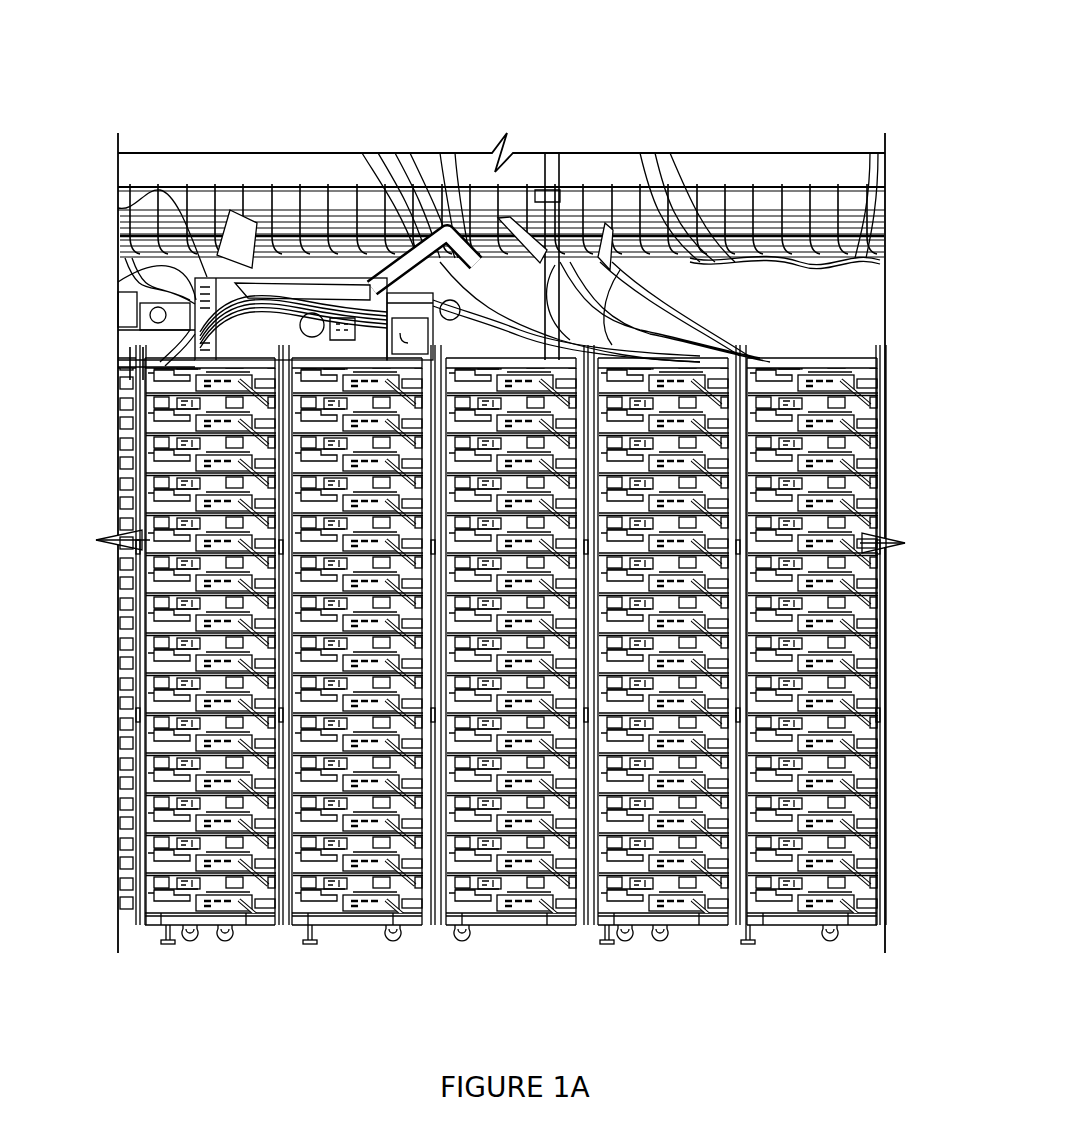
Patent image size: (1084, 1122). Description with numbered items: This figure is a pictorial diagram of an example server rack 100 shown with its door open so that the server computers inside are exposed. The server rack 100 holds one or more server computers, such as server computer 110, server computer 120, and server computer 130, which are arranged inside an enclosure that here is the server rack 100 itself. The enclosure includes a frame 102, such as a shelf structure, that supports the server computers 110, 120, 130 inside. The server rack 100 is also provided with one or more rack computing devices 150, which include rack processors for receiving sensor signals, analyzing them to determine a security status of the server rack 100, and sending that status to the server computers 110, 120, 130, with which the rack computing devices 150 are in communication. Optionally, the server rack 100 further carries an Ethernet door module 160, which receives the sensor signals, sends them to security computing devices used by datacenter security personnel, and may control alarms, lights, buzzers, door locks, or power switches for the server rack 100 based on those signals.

The server rack 100 is at (843, 107).
The frame 102 is at (140, 367).
The server computer 110 is at (855, 379).
The server computer 120 is at (855, 419).
The server computer 130 is at (855, 459).
The rack computing device 150 is at (118, 208).
The Ethernet door module 160 is at (118, 282).